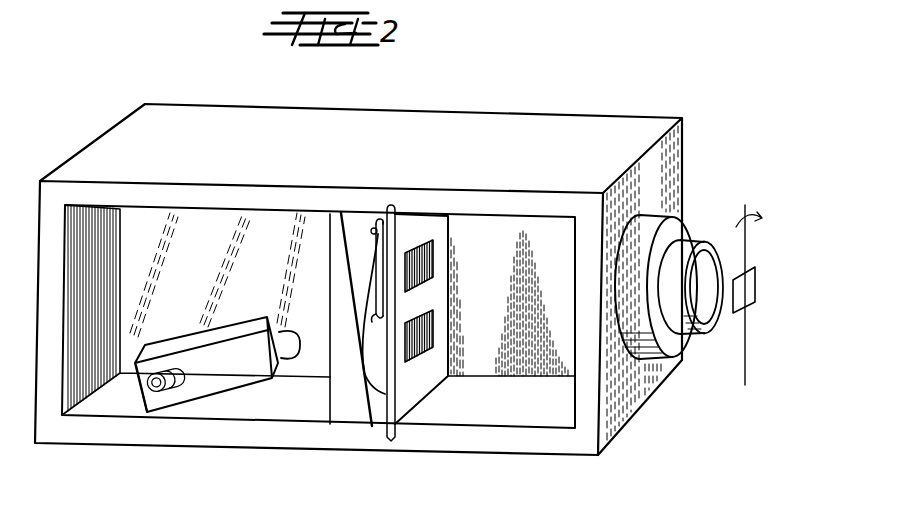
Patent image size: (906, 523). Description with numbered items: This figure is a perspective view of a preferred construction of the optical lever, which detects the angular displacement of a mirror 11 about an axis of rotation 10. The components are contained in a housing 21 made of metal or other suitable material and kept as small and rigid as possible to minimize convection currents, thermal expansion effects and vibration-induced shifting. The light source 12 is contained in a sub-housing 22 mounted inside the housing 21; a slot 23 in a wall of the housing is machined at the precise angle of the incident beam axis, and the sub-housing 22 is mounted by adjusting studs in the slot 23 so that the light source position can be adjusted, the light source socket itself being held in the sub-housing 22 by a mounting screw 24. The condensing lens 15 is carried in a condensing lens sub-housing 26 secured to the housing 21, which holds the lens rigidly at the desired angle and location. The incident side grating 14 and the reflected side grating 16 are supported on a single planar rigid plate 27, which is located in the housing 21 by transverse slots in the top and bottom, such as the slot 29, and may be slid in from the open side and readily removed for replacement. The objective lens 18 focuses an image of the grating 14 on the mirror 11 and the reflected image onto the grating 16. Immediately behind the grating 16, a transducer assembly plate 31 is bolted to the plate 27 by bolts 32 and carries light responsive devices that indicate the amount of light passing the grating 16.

The axis of rotation 10 is at (747, 353).
The mirror 11 is at (756, 268).
The light source 12 is at (185, 377).
The first optical grating 14 is at (430, 328).
The condensing lens 15 is at (380, 352).
The second optical grating 16 is at (430, 265).
The objective lens 18 is at (702, 270).
The housing 21 is at (482, 123).
The sub-housing 22 is at (227, 332).
The slot 23 is at (293, 328).
The mounting screw 24 is at (137, 390).
The condensing lens sub-housing 26 is at (331, 274).
The plate 27 is at (438, 366).
The transverse slot 29 is at (386, 445).
The transducer assembly plate 31 is at (376, 271).
The bolts 32 is at (371, 233).